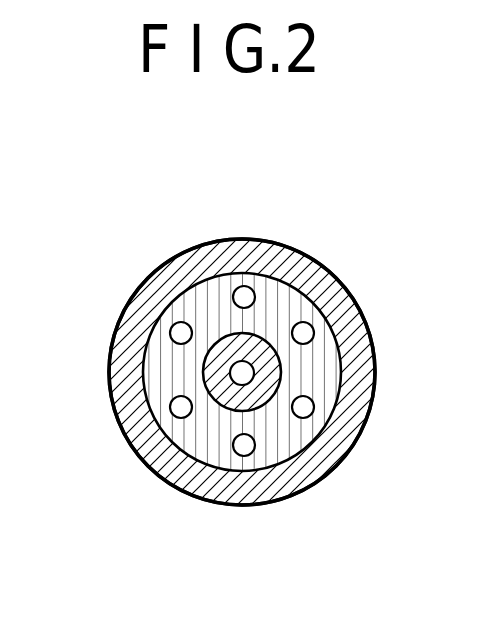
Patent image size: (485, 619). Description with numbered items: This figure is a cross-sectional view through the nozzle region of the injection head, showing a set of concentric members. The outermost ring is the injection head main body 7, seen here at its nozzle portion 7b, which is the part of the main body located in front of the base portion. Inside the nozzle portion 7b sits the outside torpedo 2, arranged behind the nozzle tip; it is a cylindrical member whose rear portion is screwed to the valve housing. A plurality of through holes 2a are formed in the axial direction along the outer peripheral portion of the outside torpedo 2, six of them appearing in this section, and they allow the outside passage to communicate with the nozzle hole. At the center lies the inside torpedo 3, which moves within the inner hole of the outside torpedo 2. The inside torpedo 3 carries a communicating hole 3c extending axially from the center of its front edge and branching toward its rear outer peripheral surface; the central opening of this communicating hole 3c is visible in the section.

The injection head main body 7 is at (112, 298).
The nozzle portion 7b is at (289, 243).
The outside torpedo 2 is at (320, 308).
The through holes 2a is at (170, 333).
The inside torpedo 3 is at (272, 371).
The communicating hole 3c is at (240, 378).